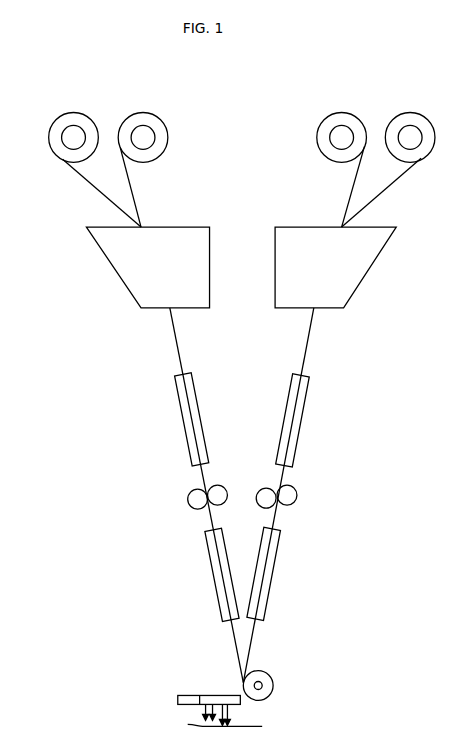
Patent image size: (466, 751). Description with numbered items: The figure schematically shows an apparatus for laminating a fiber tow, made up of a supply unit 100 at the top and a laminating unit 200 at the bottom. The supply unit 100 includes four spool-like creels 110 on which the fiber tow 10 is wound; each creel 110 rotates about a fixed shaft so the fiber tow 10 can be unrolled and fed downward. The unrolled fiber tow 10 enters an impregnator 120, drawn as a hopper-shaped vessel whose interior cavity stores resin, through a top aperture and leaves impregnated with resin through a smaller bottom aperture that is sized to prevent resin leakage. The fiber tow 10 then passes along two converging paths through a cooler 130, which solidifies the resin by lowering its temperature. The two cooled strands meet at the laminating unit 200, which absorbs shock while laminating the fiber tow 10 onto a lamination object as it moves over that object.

The supply unit 100 is at (227, 381).
The creel 110 is at (322, 128).
The impregnator 120 is at (355, 270).
The fiber tow 10 is at (304, 345).
The cooler 130 is at (268, 572).
The laminating unit 200 is at (166, 692).